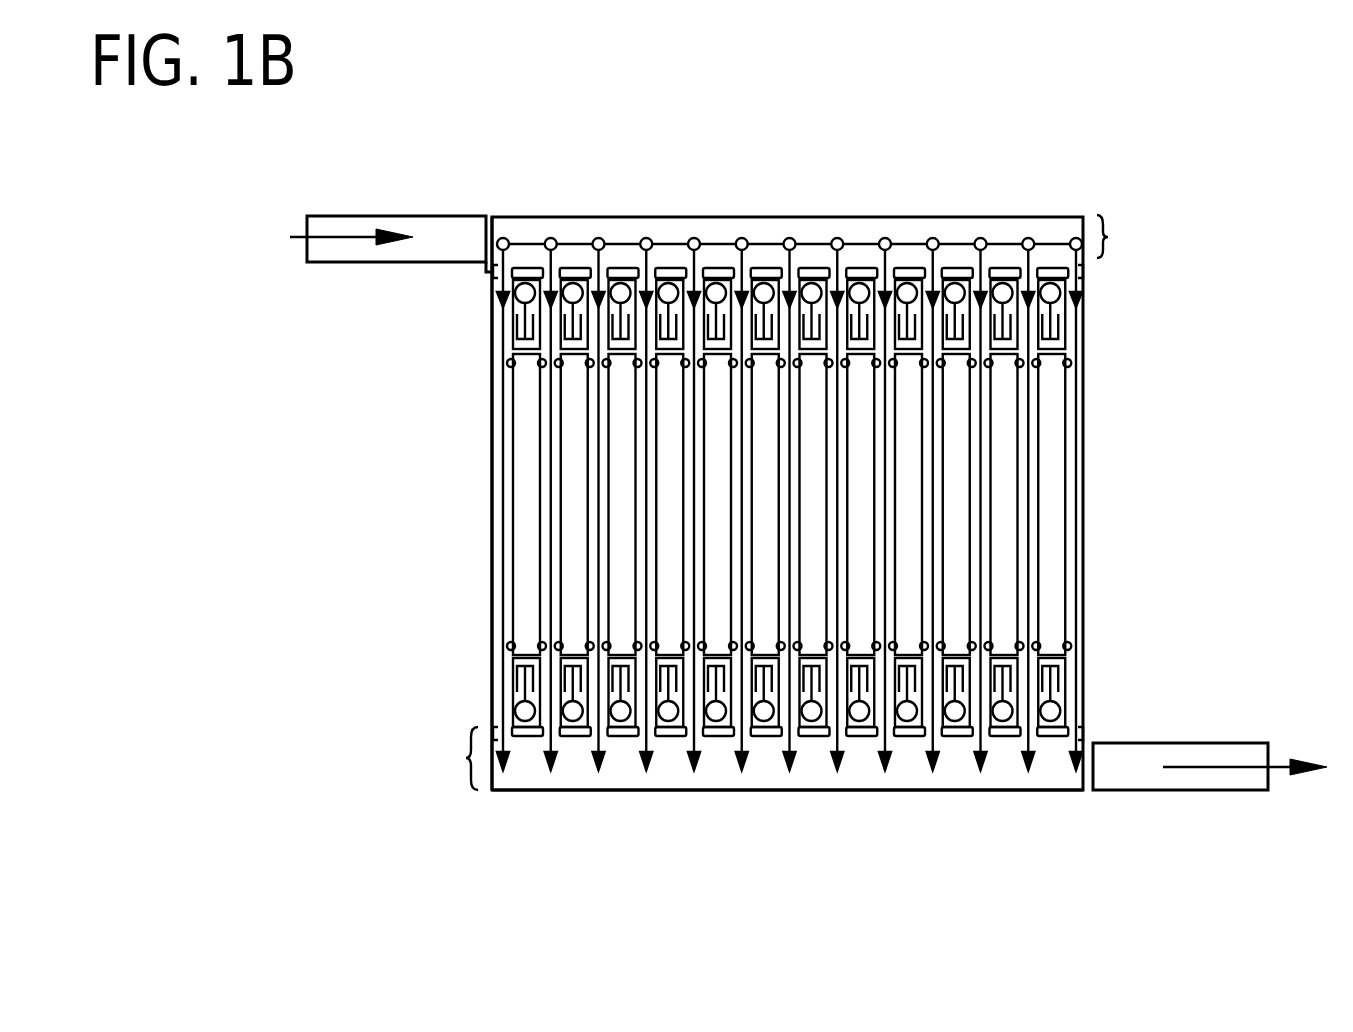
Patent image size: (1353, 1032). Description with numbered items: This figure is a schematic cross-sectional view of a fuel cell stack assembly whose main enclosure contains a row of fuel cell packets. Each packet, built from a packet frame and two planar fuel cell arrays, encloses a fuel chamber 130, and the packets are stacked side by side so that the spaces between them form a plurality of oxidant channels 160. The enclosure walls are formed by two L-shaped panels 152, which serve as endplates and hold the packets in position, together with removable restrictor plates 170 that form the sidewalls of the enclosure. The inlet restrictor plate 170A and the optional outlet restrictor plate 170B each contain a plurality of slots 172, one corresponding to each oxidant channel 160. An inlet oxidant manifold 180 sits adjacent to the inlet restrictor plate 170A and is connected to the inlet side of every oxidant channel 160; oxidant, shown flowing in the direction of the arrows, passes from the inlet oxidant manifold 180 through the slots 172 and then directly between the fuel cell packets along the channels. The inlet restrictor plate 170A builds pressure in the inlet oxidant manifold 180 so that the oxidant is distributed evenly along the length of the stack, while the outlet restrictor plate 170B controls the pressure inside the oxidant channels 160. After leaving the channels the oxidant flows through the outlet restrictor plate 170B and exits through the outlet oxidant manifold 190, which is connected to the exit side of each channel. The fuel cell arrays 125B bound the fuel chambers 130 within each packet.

The flow channels 125B is at (940, 732).
The fuel chamber 130 is at (953, 427).
The L-shaped panel 152 is at (492, 455).
The oxidant channel 160 is at (723, 742).
The removable restrictor plate 170 is at (1085, 512).
The inlet restrictor plate 170A is at (1047, 257).
The outlet restrictor plate 170B is at (1080, 722).
The restrictor plate slot 172 is at (570, 277).
The inlet oxidant manifold 180 is at (1108, 238).
The outlet oxidant manifold 190 is at (467, 760).